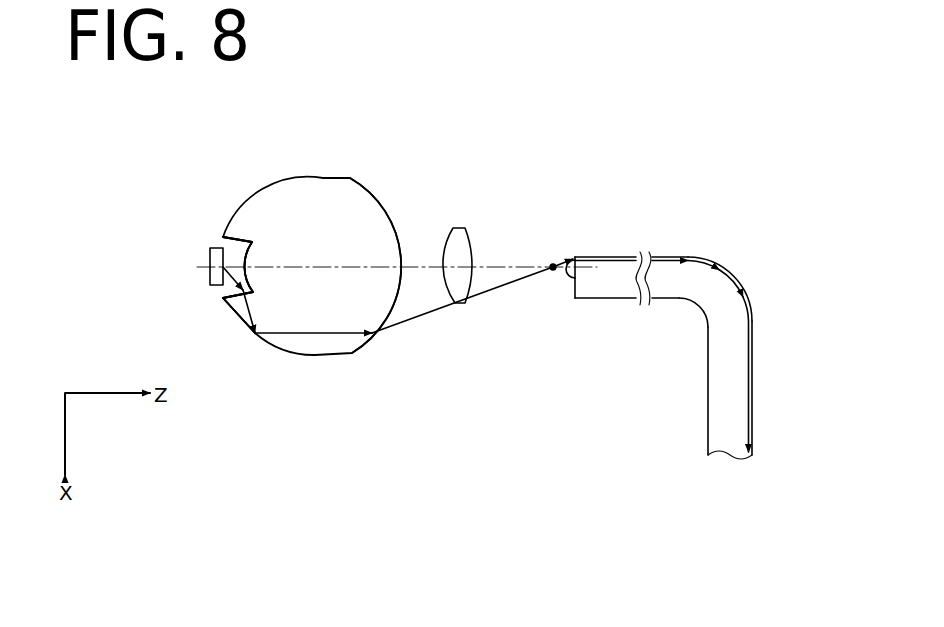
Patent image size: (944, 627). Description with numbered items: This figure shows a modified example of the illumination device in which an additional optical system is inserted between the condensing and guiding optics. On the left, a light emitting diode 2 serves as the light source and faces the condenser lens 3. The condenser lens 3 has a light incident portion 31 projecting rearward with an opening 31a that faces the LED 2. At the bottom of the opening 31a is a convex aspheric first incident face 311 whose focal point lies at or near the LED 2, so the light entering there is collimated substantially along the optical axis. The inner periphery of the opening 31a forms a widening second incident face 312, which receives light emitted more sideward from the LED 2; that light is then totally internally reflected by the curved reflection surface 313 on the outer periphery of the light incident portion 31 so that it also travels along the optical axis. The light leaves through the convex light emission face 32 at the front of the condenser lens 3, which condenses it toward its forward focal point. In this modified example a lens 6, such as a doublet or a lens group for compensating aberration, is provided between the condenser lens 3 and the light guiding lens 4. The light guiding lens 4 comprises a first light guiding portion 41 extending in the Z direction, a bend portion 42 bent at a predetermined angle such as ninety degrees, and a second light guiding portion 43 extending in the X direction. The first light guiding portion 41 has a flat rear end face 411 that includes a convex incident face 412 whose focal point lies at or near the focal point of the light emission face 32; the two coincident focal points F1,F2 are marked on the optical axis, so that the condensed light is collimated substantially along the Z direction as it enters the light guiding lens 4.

The light emitting diode (LED) 2 is at (210, 257).
The condenser lens 3 is at (325, 177).
The light incident portion 31 is at (222, 173).
The opening 31a is at (237, 248).
The first incident face 311 is at (238, 278).
The second incident face 312 is at (223, 237).
The reflection surface 313 is at (237, 310).
The light emission face 32 is at (368, 197).
The light guiding lens 4 is at (638, 313).
The first light guiding portion 41 is at (618, 257).
The rear end face (first end face) 411 is at (577, 296).
The incident face 412 is at (568, 258).
The bend portion 42 is at (710, 260).
The second light guiding portion 43 is at (708, 377).
The lens 6 is at (462, 228).
The focal points F1,F2 is at (552, 270).